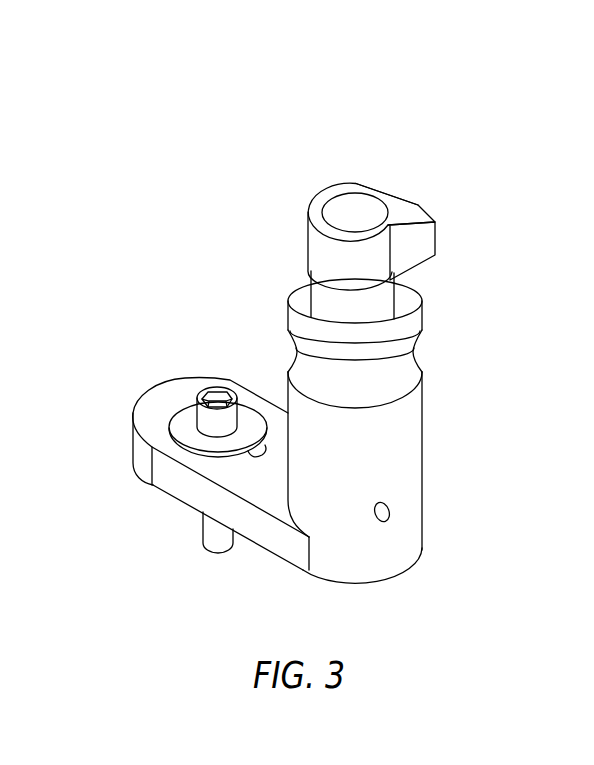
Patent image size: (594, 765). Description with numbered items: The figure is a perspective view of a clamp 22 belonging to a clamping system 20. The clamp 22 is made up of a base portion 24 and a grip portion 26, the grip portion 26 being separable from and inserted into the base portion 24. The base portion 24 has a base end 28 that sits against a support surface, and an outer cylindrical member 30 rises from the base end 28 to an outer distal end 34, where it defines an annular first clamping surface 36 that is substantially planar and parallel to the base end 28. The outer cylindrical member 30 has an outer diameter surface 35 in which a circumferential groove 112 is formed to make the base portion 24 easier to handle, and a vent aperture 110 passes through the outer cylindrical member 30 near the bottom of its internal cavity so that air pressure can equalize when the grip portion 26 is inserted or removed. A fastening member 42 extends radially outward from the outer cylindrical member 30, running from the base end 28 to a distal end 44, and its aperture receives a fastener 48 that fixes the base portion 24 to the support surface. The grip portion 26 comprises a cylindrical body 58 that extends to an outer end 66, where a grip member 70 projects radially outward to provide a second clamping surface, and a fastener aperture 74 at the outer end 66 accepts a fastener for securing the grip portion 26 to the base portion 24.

The clamping system 20 is at (492, 131).
The clamp 22 is at (252, 138).
The base portion 24 is at (447, 444).
The grip portion 26 is at (292, 240).
The base end 28 is at (172, 510).
The outer cylindrical member 30 is at (425, 405).
The outer distal end 34 is at (442, 276).
The outer diameter surface 35 is at (407, 492).
The annular first clamping surface 36 is at (302, 300).
The fastening member 42 is at (128, 443).
The distal end 44 is at (150, 413).
The fastener 48 is at (196, 411).
The cylindrical body 58 is at (384, 302).
The outer end 66 is at (317, 181).
The grip member 70 is at (432, 213).
The fastener aperture 74 is at (375, 182).
The vent aperture 110 is at (388, 516).
The circumferential groove 112 is at (429, 347).